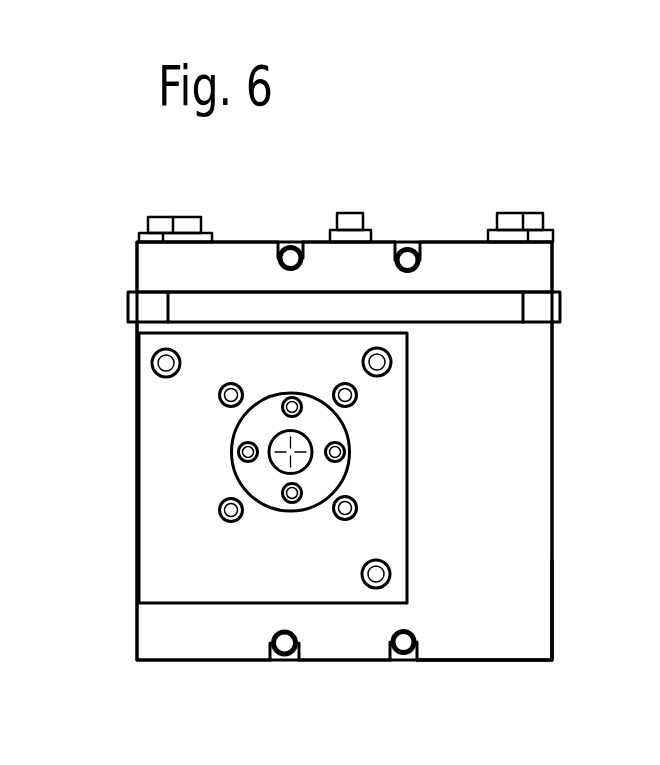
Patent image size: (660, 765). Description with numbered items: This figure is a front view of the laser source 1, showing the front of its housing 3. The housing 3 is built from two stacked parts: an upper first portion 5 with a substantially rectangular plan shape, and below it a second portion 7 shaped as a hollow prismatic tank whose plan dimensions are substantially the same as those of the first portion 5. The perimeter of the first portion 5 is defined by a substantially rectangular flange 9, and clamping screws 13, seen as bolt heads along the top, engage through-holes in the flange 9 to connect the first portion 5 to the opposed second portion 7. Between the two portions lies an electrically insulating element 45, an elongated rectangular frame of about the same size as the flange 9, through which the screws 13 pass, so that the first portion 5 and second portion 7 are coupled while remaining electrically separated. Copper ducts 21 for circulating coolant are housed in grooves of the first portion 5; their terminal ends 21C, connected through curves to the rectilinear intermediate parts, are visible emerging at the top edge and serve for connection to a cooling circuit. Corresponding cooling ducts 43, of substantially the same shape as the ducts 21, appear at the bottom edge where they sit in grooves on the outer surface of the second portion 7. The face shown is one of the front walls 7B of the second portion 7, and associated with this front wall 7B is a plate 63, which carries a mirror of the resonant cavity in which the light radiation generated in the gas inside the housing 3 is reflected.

The laser source 1 is at (389, 156).
The housing 3 is at (122, 275).
The first portion 5 is at (578, 235).
The second portion 7 is at (574, 451).
The front walls 7B is at (487, 627).
The flange 9 is at (537, 262).
The clamping screws 13 is at (160, 228).
The ducts 21 is at (289, 232).
The terminal ends 21C is at (408, 247).
The cooling ducts 43 is at (284, 670).
The electrically insulating element 45 is at (547, 303).
The plates 63 is at (157, 500).